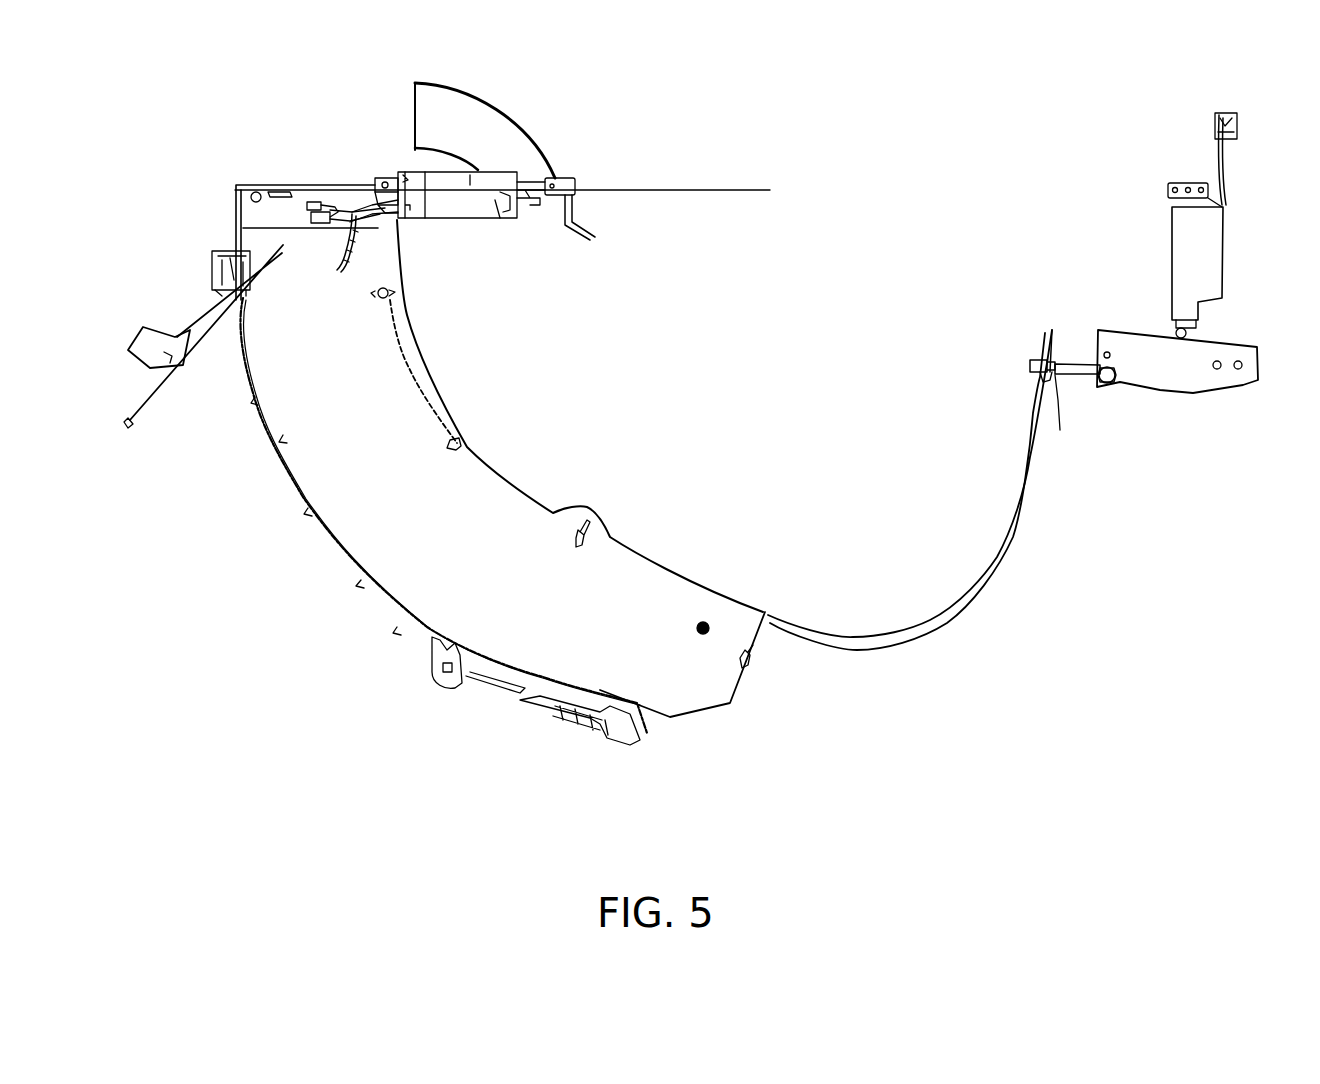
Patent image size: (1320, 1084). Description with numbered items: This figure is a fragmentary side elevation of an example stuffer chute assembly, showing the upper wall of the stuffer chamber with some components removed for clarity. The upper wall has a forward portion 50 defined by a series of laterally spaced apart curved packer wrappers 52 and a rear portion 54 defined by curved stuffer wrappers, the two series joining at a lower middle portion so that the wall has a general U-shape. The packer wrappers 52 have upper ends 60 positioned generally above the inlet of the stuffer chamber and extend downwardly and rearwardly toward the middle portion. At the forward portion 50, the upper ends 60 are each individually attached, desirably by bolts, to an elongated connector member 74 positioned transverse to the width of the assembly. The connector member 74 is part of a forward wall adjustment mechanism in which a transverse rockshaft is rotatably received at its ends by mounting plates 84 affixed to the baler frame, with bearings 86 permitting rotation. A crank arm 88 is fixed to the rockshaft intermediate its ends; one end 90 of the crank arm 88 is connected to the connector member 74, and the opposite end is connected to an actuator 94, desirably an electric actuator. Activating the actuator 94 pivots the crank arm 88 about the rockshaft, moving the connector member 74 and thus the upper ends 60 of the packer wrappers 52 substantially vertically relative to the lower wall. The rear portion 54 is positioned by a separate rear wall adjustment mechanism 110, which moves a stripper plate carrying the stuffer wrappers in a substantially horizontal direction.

The rear wall adjustment mechanism 110 is at (396, 158).
The rear portion 54 is at (400, 238).
The packer wrapper 52 is at (958, 605).
The forward portion 50 is at (1040, 358).
The upper end 60 is at (1055, 330).
The crank arm 88 is at (1073, 362).
The end 90 is at (1040, 375).
The connector member 74 is at (1056, 378).
The mounting plate 84 is at (1205, 395).
The bearing 86 is at (1115, 380).
The actuator 94 is at (1225, 264).